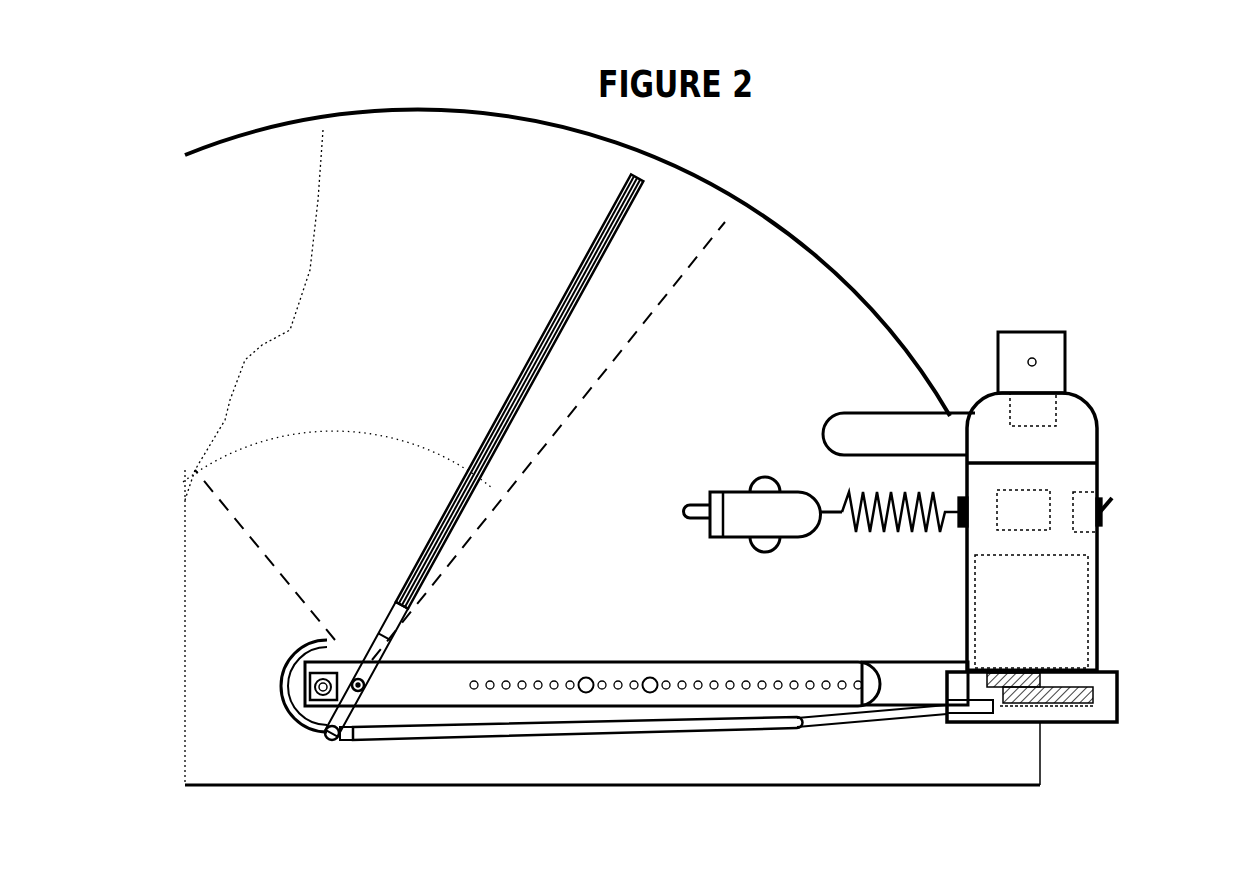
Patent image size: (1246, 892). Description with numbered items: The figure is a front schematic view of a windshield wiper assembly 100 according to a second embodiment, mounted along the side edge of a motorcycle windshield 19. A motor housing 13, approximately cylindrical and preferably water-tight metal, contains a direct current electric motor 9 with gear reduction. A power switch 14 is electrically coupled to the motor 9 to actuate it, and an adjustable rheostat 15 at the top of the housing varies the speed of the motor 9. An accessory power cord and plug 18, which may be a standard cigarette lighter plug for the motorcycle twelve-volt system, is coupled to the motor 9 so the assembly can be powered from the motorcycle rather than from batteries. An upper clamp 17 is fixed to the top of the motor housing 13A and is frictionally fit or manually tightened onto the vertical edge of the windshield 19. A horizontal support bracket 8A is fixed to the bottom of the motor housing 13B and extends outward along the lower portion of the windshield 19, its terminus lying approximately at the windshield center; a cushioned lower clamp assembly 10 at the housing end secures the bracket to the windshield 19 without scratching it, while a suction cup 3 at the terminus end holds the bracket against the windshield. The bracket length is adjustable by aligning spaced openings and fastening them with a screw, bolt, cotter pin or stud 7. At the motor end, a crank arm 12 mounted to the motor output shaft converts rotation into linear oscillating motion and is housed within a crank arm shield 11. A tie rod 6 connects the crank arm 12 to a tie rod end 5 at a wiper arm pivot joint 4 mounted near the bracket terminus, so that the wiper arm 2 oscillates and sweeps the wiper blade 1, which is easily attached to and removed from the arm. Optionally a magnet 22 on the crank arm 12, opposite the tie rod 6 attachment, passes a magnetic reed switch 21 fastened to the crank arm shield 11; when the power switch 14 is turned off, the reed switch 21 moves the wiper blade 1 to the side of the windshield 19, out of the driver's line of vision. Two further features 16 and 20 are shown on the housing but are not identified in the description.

The wiper blade 1 is at (552, 305).
The wiper arm 2 is at (355, 678).
The suction cup 3 is at (290, 690).
The wiper arm pivot joint 4 is at (328, 740).
The tie rod end 5 is at (345, 742).
The tie rod 6 is at (420, 735).
The stud 7 is at (592, 644).
The horizontal support bracket 8A is at (770, 663).
The direct current electric motor 9 is at (998, 600).
The cushioned lower clamp assembly 10 is at (900, 668).
The crank arm shield 11 is at (1117, 706).
The crank arm 12 is at (1093, 703).
The motor housing 13 is at (1089, 523).
The top of the motor housing 13A is at (1097, 440).
The bottom of the motor housing 13B is at (1098, 670).
The power switch 14 is at (1108, 508).
The adjustable rheostat 15 is at (1065, 330).
The nozzle 16 is at (1010, 418).
The upper clamp 17 is at (878, 408).
The accessory power cord and plug 18 is at (723, 490).
The windshield 19 is at (734, 212).
The control unit 20 is at (1042, 490).
The magnetic reed switch 21 is at (962, 713).
The magnet 22 is at (1050, 700).
The wiper assembly 100 is at (899, 192).